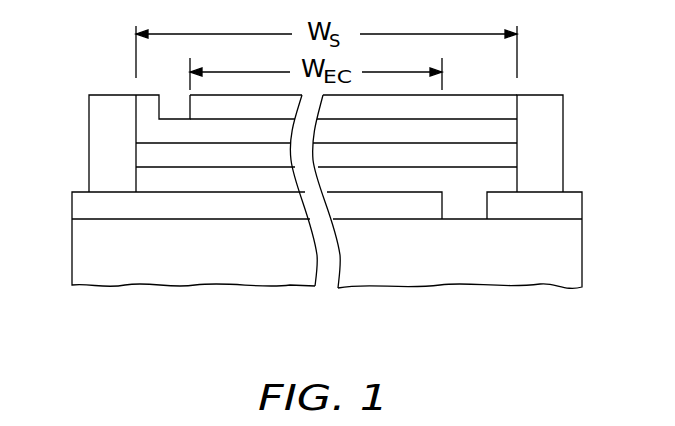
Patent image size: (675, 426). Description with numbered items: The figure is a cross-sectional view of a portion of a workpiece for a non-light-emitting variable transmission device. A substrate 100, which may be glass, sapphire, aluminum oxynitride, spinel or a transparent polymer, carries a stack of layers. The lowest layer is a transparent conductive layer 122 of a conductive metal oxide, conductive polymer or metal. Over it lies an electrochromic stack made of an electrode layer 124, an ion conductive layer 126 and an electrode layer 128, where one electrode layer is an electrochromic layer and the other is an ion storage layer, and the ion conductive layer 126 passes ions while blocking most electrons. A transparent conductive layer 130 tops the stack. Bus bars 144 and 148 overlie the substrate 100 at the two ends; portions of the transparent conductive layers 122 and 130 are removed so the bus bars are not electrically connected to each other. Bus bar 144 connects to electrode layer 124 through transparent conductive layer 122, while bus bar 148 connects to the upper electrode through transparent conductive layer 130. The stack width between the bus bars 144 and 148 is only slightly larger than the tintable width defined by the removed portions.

The substrate 100 is at (565, 266).
The transparent conductive layer 122 is at (82, 205).
The electrode layer 124 is at (180, 182).
The ion conductive layer 126 is at (245, 153).
The electrode layer 128 is at (353, 135).
The transparent conductive layer 130 is at (413, 110).
The bus bar 144 is at (103, 140).
The bus bar 148 is at (557, 138).